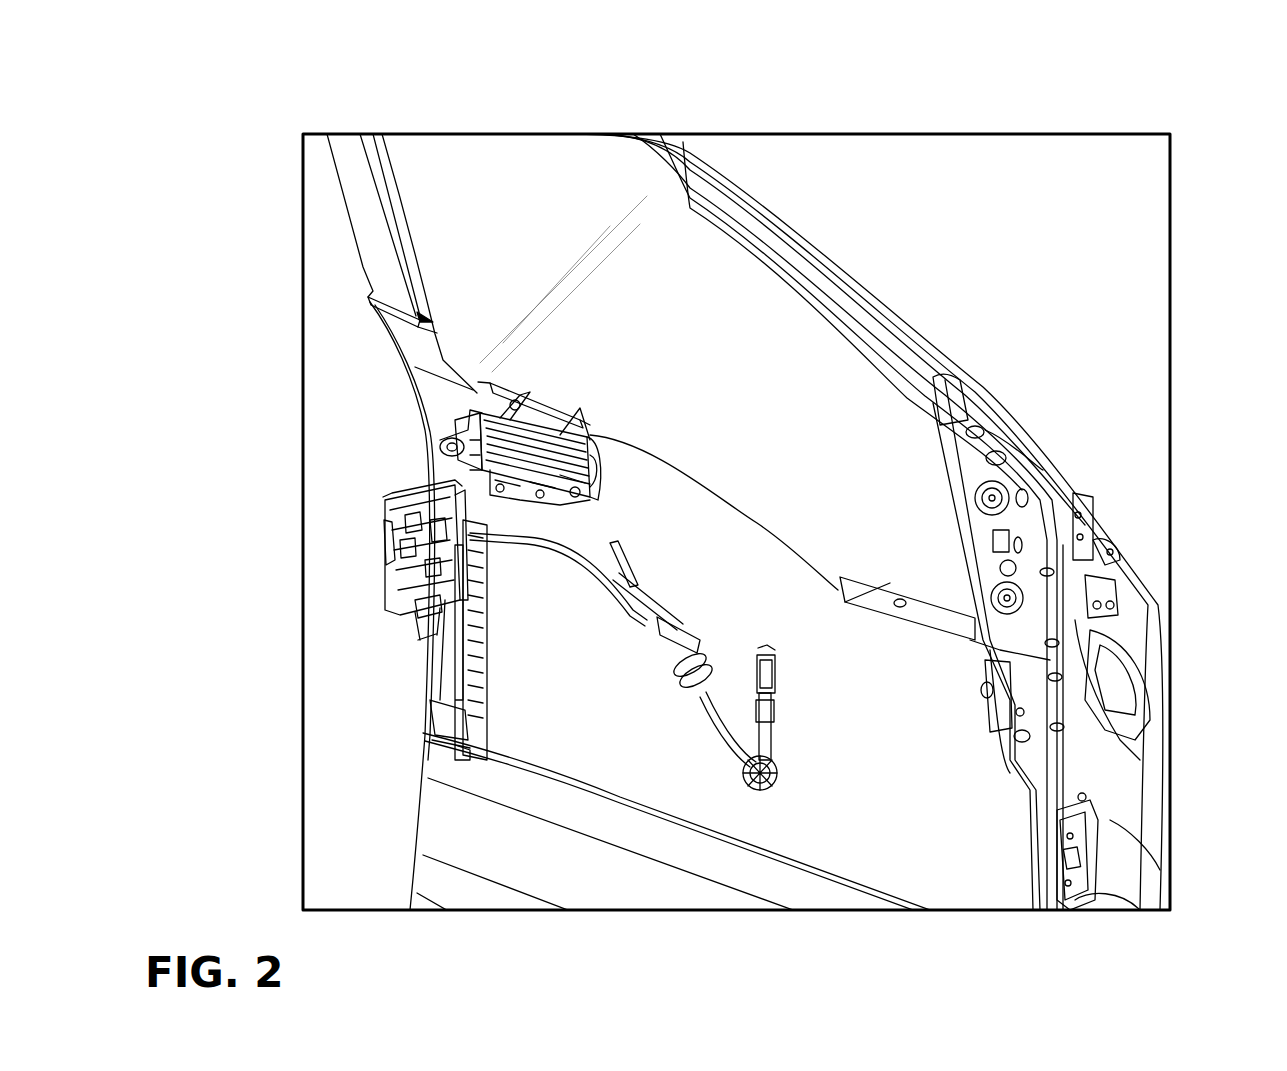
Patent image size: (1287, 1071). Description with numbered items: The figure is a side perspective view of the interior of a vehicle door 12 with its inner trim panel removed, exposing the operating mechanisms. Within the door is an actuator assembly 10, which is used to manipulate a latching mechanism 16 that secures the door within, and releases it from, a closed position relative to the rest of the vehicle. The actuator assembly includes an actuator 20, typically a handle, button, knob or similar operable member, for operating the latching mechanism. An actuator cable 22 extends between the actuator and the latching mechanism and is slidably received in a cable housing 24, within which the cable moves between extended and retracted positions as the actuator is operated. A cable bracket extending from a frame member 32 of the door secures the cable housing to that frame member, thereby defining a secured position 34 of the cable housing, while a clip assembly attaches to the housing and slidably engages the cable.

The actuator assembly 10 is at (597, 434).
The door 12 is at (858, 238).
The latching mechanism 16 is at (882, 698).
The actuator 20 is at (403, 600).
The actuator cable 22 is at (620, 477).
The cable housing 24 is at (617, 517).
The frame member 32 is at (443, 419).
The secured position 34 is at (600, 414).